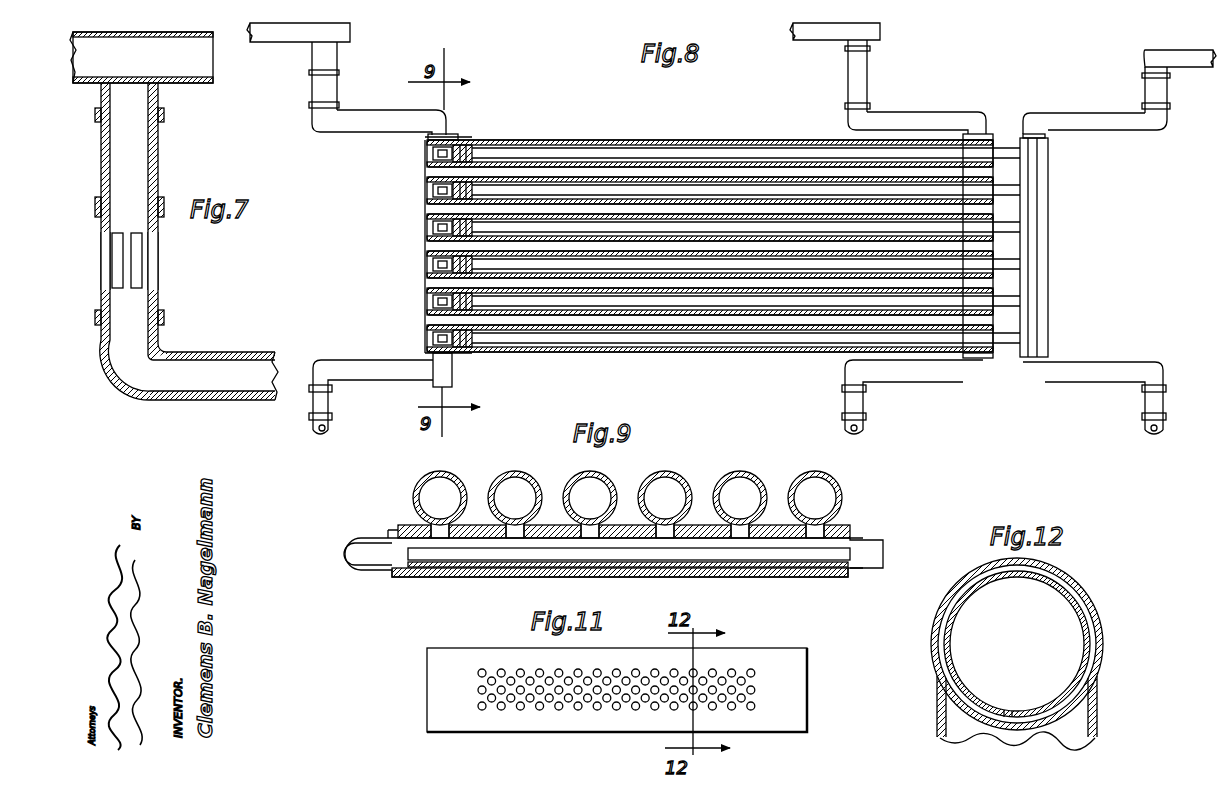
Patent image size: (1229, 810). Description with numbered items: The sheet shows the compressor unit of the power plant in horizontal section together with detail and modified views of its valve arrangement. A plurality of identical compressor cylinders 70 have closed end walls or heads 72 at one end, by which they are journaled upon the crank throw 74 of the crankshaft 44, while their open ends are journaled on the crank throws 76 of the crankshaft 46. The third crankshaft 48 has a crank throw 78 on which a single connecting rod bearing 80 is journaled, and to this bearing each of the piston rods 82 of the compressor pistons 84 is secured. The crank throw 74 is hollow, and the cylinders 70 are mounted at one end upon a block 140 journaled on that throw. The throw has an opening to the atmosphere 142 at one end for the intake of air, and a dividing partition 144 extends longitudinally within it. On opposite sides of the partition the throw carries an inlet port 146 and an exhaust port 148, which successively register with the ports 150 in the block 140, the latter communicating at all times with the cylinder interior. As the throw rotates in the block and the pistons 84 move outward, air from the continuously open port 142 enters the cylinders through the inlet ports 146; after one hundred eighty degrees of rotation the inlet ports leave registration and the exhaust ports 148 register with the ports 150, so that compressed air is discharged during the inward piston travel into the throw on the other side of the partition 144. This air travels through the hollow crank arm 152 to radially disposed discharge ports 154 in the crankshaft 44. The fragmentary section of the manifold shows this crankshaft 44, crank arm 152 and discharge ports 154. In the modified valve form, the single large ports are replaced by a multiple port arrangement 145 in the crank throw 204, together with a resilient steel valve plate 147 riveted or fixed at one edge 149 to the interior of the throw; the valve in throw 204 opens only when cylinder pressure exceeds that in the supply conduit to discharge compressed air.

In FIG. 7, the crankshaft 44 is at (160, 156).
In FIG. 8, the crankshaft 44 is at (396, 40).
In FIG. 8, the crankshaft 46 is at (862, 84).
In FIG. 8, the crankshaft 48 is at (1152, 60).
In FIG. 8, the compressor cylinder 70 is at (510, 176).
In FIG. 9, the compressor cylinder 70 is at (462, 486).
In FIG. 8, the closed end wall or head 72 is at (426, 190).
In FIG. 8, the crank throw 74 is at (455, 134).
In FIG. 9, the crank throw 74 is at (386, 572).
In FIG. 8, the crank throw 76 is at (986, 124).
In FIG. 8, the crank throw 78 is at (1030, 360).
In FIG. 8, the connecting rod bearing 80 is at (1030, 218).
In FIG. 8, the piston rod or connecting rod 82 is at (756, 193).
In FIG. 8, the compressor piston 84 is at (470, 338).
In FIG. 9, the block 140 is at (700, 522).
In FIG. 8, the opening to the atmosphere 142 is at (453, 376).
In FIG. 9, the opening to the atmosphere 142 is at (878, 540).
In FIG. 9, the dividing partition 144 is at (530, 560).
In FIG. 11, the multiple port arrangement 145 is at (734, 688).
In FIG. 12, the multiple port arrangement 145 is at (1015, 712).
In FIG. 9, the inlet port 146 is at (448, 578).
In FIG. 12, the resilient steel blade or valve plate 147 is at (978, 703).
In FIG. 9, the exhaust port 148 is at (418, 525).
In FIG. 12, the riveted or fixed edge 149 is at (951, 665).
In FIG. 9, the port in the block 150 is at (742, 532).
In FIG. 7, the hollow crank arm 152 is at (230, 358).
In FIG. 8, the hollow crank arm 152 is at (380, 124).
In FIG. 7, the discharge port 154 is at (112, 262).
In FIG. 11, the crank throw 204 is at (787, 665).
In FIG. 12, the crank throw 204 is at (962, 598).